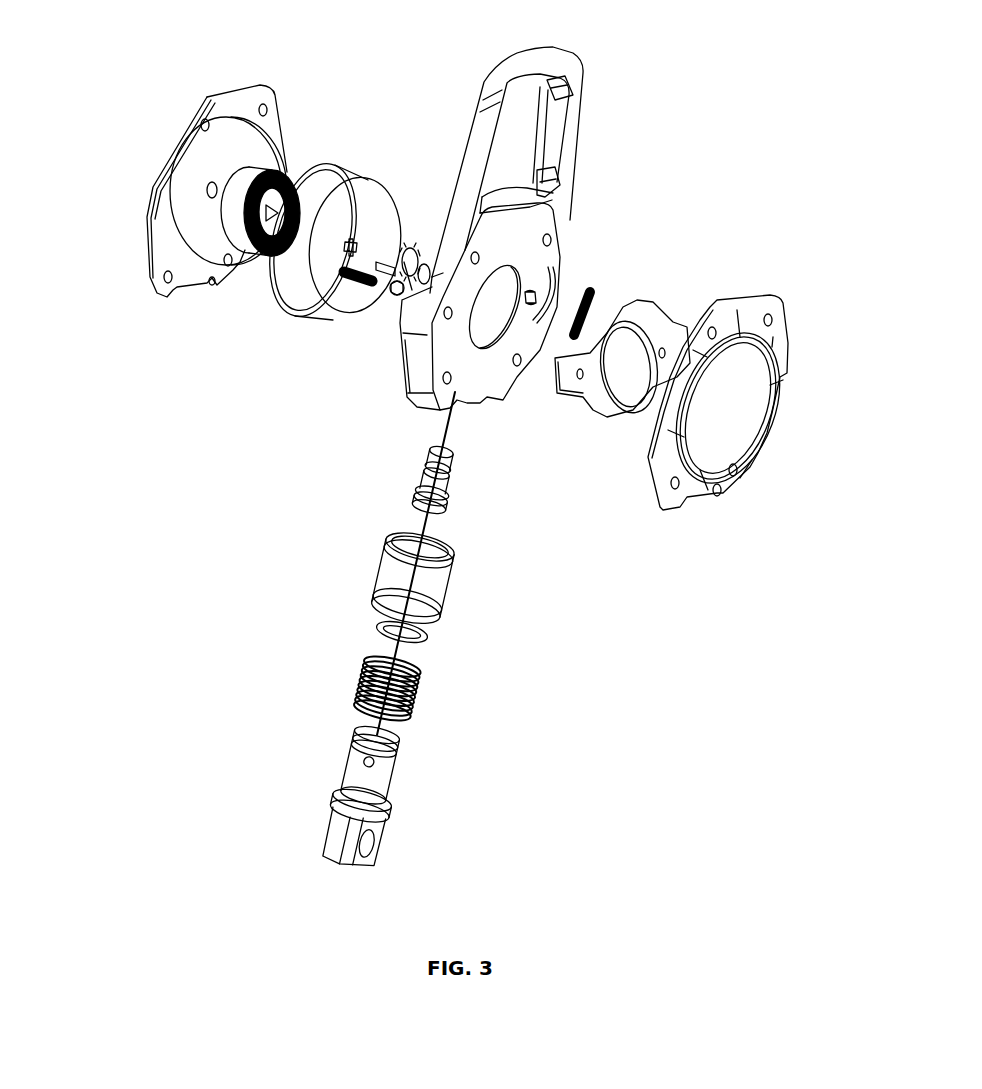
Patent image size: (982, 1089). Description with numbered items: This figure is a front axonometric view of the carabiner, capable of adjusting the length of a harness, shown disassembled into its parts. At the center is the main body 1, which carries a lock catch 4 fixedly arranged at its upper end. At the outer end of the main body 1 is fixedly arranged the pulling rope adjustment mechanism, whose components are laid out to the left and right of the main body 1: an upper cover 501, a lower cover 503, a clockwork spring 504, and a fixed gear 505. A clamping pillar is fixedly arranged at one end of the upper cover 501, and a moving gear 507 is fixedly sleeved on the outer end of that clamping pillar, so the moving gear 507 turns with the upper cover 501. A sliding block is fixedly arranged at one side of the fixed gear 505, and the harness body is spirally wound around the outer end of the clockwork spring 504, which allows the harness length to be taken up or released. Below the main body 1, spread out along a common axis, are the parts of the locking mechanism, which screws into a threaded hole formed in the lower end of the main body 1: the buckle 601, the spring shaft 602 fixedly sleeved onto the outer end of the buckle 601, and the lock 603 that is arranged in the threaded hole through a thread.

The main body 1 is at (415, 363).
The lock catch 4 is at (500, 90).
The upper cover 501 is at (780, 357).
The lower cover 503 is at (163, 203).
The clockwork spring 504 is at (287, 173).
The fixed gear 505 is at (668, 325).
The moving gear 507 is at (423, 238).
The buckle 601 is at (355, 773).
The spring shaft 602 is at (392, 573).
The lock 603 is at (450, 482).